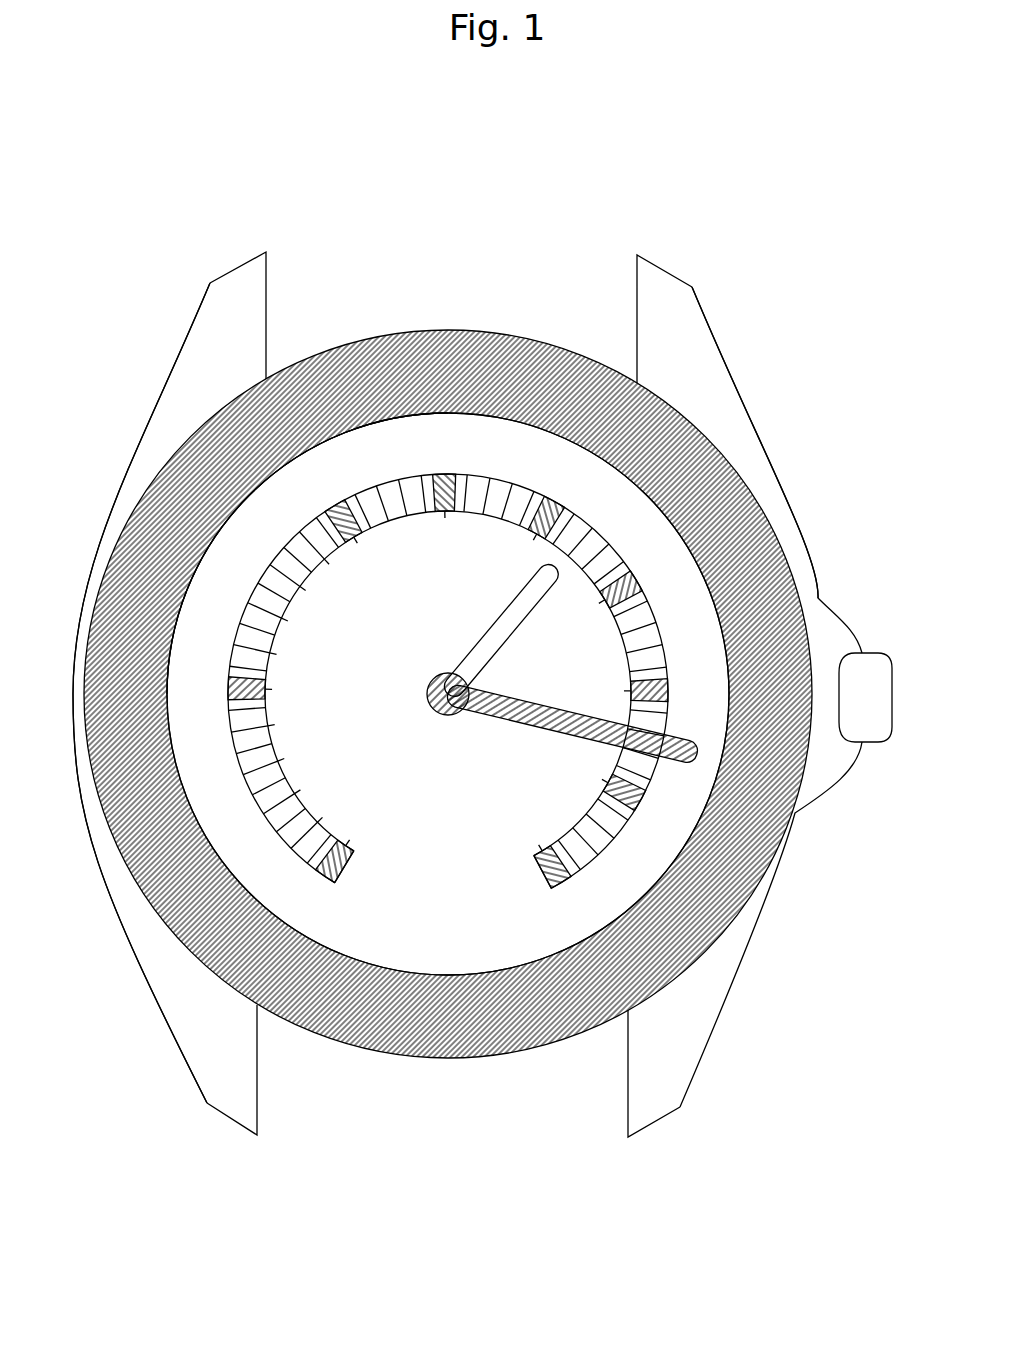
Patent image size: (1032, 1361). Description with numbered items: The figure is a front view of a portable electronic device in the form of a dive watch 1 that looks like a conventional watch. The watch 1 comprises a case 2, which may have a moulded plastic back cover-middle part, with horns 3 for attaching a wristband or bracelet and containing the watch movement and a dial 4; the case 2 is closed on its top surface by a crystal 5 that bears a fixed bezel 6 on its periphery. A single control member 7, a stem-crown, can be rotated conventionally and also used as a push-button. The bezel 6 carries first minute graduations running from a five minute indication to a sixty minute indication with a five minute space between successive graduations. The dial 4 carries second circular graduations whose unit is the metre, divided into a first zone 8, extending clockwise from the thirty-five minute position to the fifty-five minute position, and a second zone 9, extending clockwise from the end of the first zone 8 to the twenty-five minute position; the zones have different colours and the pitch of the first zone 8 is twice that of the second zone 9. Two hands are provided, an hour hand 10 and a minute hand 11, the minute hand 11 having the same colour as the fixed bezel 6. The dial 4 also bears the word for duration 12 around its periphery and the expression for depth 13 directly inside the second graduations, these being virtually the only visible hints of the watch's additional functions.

The watch 1 is at (572, 1200).
The case 2 is at (815, 600).
The horns 3 is at (248, 298).
The dial 4 is at (622, 493).
The crystal 5 is at (196, 648).
The fixed bezel 6 is at (800, 818).
The control member 7 is at (870, 672).
The first zone 8 is at (252, 771).
The second zone 9 is at (610, 565).
The hour hand 10 is at (490, 643).
The minute hand 11 is at (485, 703).
The duration indication 12 is at (395, 430).
The depth indication 13 is at (362, 582).